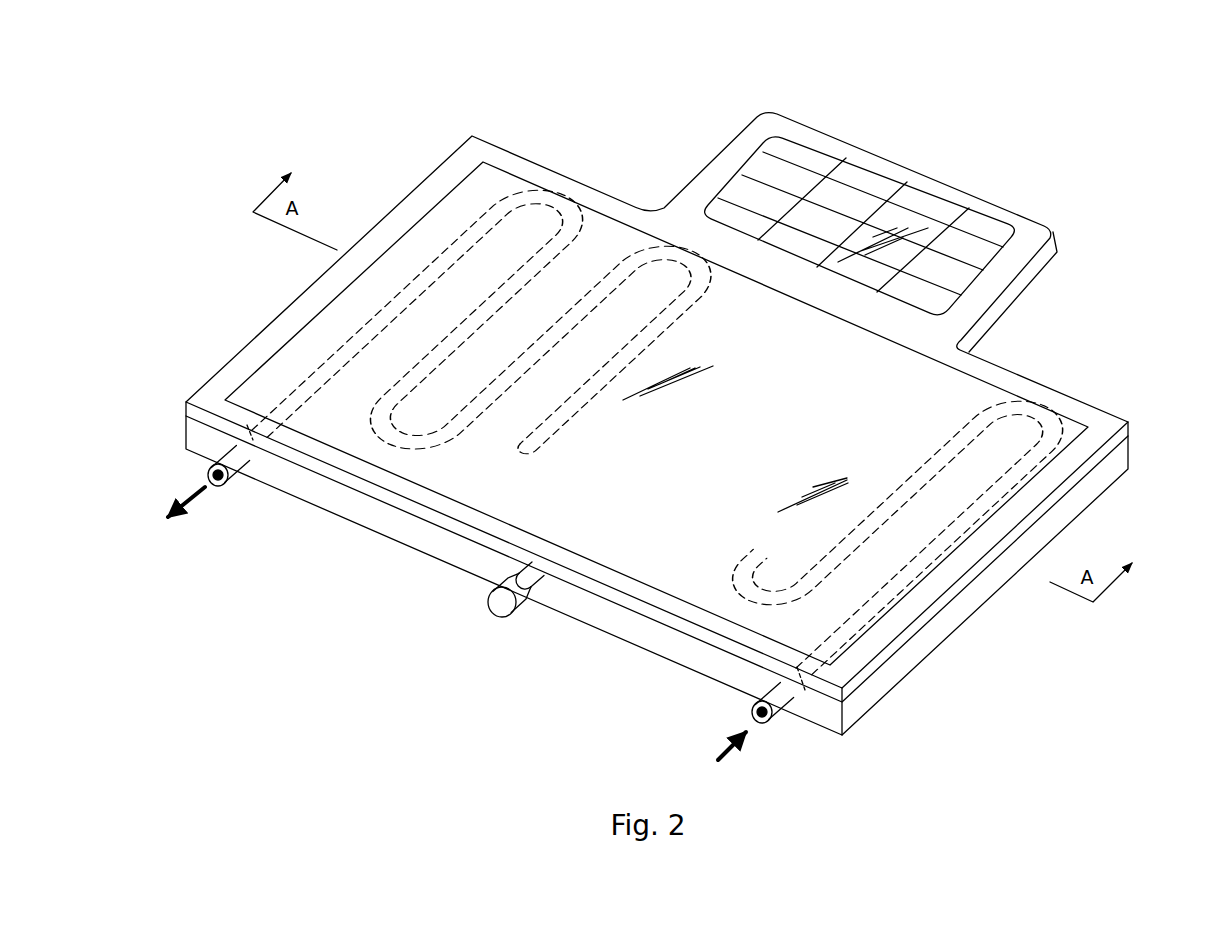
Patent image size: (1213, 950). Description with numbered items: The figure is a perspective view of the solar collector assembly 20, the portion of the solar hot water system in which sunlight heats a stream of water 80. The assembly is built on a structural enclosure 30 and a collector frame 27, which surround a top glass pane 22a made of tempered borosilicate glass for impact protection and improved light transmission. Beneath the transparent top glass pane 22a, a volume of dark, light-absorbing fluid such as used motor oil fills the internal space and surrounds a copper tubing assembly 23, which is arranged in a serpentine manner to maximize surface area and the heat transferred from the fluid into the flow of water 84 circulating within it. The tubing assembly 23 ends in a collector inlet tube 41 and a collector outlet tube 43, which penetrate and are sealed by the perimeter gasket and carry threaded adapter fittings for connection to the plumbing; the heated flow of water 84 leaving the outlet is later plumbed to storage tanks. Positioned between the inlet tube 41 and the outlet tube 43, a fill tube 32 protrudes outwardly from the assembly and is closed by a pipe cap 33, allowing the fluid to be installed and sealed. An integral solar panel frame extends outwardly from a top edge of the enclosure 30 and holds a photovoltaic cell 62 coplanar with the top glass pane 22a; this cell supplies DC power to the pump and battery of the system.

The solar collector assembly 20 is at (1074, 106).
The top glass pane 22a is at (893, 380).
The tubing assembly 23 is at (965, 450).
The collector frame 27 is at (240, 360).
The structural enclosure 30 is at (300, 487).
The fill tube 32 is at (526, 592).
The pipe cap 33 is at (500, 607).
The collector inlet tube 41 is at (770, 717).
The collector outlet tube 43 is at (214, 468).
The photovoltaic cell 62 is at (917, 208).
The stream of water 80 is at (732, 743).
The flow of water 84 is at (165, 528).